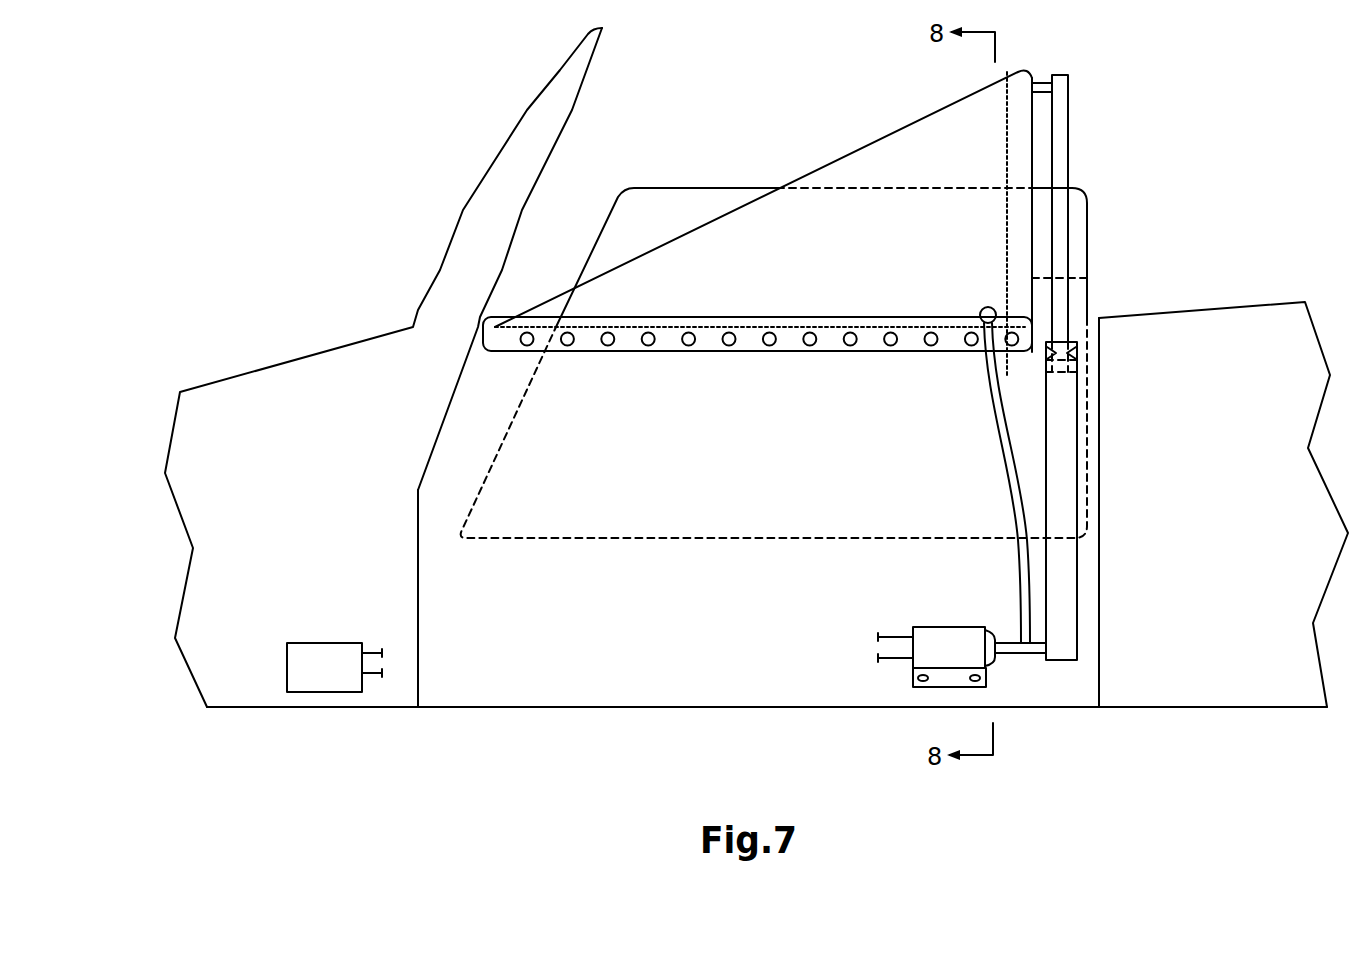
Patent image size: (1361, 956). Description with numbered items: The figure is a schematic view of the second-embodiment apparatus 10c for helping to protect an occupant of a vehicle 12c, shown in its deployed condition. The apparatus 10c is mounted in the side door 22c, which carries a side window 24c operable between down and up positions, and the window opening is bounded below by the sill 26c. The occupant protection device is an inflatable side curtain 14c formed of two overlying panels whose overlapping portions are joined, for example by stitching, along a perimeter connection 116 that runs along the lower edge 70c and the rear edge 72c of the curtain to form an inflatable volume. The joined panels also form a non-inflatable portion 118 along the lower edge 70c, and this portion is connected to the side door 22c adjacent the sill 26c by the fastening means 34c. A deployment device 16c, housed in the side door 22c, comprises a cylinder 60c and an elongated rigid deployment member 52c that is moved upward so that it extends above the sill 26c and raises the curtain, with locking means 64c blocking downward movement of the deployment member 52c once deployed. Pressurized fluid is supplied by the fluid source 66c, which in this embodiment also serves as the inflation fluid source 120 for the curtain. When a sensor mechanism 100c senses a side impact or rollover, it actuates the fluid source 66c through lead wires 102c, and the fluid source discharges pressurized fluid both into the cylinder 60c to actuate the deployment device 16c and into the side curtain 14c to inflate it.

The apparatus 10c is at (1235, 110).
The vehicle 12c is at (408, 118).
The side curtain 14c is at (828, 207).
The deployment device 16c is at (1063, 477).
The side door 22c is at (577, 707).
The side window 24c is at (655, 227).
The sill 26c is at (762, 317).
The fastening means 34c is at (927, 340).
The deployment member 52c is at (1063, 258).
The cylinder 60c is at (1065, 603).
The locking means 64c is at (1072, 353).
The fluid source 66c is at (978, 638).
The lower edge 70c is at (627, 352).
The rear edge 72c is at (1033, 242).
The sensor mechanism 100c is at (312, 650).
The lead wires 102c is at (897, 660).
The perimeter connection 116 is at (707, 330).
The non-inflatable portion 118 is at (748, 345).
The inflation fluid source 120 is at (937, 633).